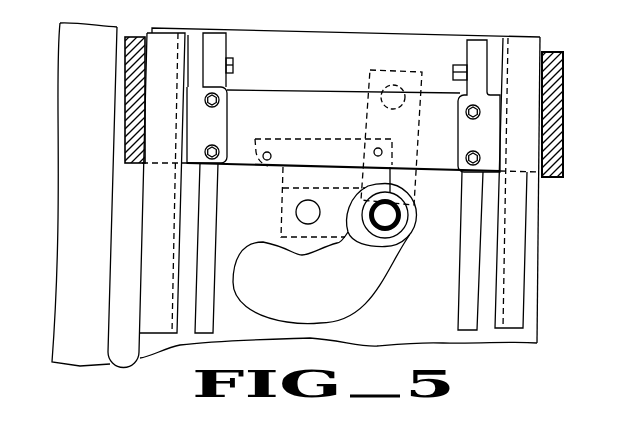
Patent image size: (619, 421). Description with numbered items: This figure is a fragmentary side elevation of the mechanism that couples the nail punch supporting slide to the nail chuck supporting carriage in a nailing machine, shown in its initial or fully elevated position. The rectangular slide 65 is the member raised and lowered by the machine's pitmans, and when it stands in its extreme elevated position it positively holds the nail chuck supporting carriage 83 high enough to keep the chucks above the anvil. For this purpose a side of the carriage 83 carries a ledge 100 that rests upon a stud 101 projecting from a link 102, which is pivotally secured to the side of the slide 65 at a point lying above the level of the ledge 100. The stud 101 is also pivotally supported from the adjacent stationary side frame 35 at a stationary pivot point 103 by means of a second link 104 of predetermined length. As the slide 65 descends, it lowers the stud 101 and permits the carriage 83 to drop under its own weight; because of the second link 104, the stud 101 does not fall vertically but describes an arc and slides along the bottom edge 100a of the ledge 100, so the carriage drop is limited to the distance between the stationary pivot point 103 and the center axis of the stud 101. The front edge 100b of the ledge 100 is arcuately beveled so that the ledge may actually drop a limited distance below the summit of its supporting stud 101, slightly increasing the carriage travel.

The stationary side frame 35 is at (438, 313).
The rectangular slide 65 is at (133, 105).
The nail chuck supporting carriage 83 is at (258, 88).
The ledge 100 is at (302, 178).
The bottom edge of ledge 100a is at (324, 179).
The front edge of ledge 100b is at (338, 150).
The stud 101 is at (403, 226).
The link 102 is at (410, 134).
The stationary pivot point 103 is at (309, 210).
The second link 104 is at (353, 238).